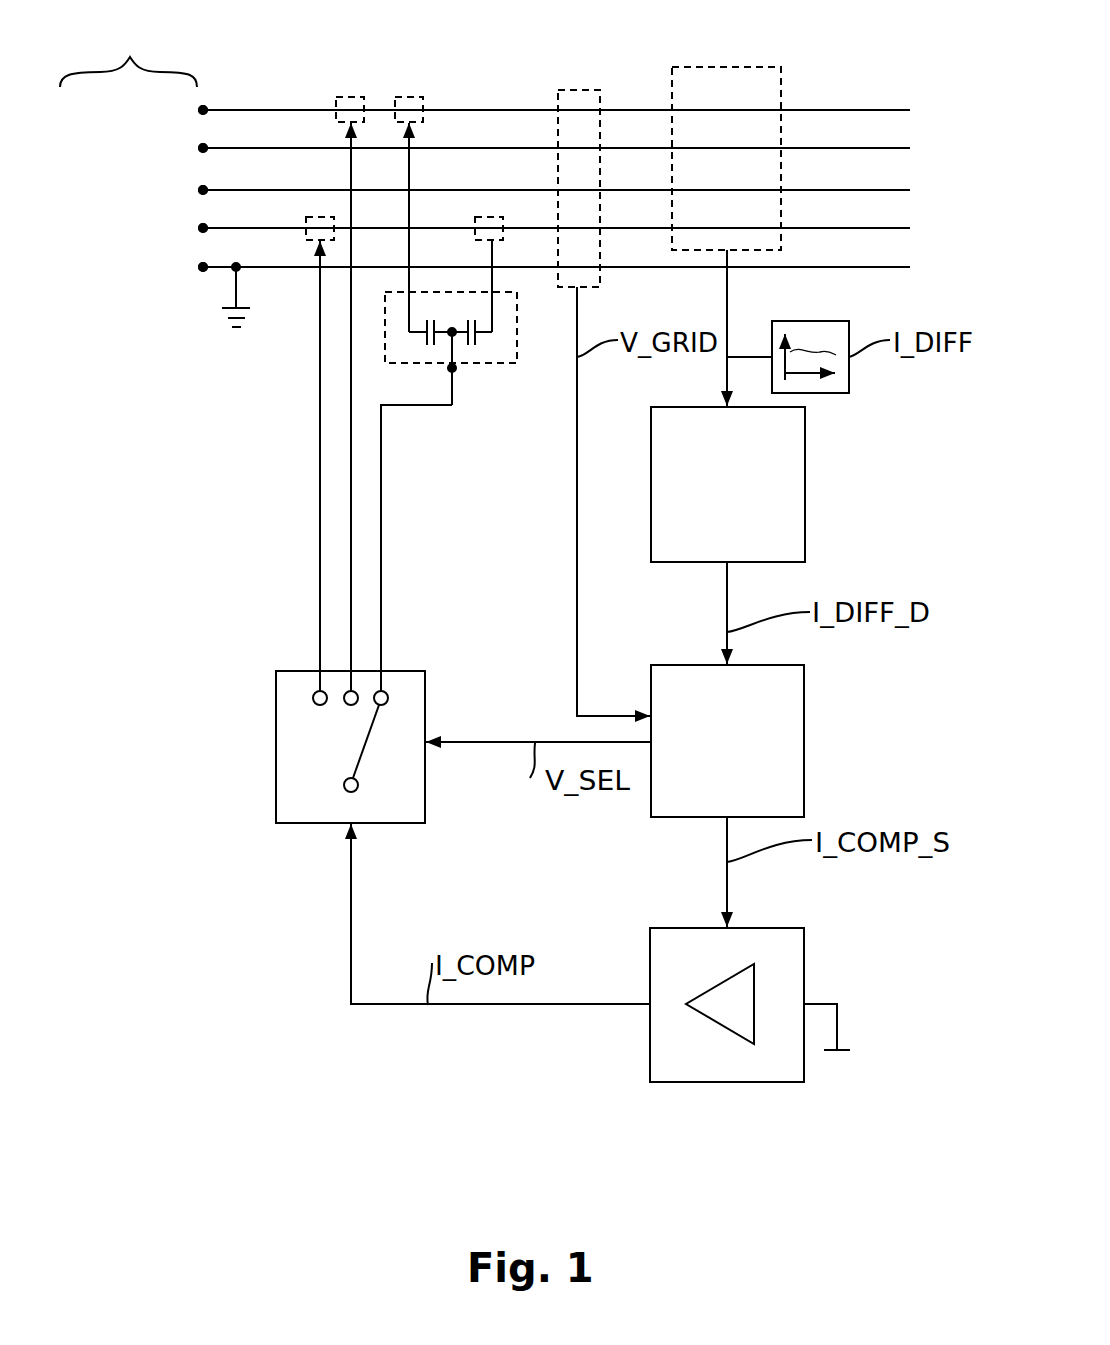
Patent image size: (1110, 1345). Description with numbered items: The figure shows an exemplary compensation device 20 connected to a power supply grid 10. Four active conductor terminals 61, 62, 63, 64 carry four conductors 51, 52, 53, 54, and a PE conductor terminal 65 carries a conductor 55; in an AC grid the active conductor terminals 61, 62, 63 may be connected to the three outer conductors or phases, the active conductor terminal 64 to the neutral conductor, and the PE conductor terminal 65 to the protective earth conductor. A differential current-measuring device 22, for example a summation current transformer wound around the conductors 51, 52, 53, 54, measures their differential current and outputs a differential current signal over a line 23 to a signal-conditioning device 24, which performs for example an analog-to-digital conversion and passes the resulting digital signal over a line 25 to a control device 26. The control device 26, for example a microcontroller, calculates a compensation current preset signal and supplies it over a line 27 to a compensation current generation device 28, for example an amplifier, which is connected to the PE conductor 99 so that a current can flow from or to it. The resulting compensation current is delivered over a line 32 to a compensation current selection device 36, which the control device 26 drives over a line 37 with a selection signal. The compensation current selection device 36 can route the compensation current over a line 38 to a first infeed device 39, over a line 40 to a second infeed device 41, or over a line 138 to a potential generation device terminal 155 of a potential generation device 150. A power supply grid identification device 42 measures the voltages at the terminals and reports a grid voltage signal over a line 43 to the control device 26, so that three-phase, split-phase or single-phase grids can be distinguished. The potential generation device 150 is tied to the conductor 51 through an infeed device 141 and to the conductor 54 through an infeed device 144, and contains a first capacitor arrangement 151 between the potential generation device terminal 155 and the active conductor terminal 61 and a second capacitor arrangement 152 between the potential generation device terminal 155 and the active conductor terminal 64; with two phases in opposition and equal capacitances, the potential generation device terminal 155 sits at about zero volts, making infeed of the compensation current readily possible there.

The power supply grid 10 is at (128, 57).
The compensation device 20 is at (278, 948).
The differential current-measuring device 22 is at (733, 66).
The line 23 is at (727, 310).
The signal-conditioning device 24 is at (805, 472).
The line 25 is at (727, 602).
The control device 26 is at (804, 742).
The line 27 is at (727, 897).
The compensation current generation device 28 is at (790, 927).
The line 32 is at (515, 1008).
The compensation current selection device 36 is at (425, 685).
The line 37 is at (485, 743).
The line 38 is at (318, 553).
The first infeed device 39 is at (317, 215).
The line 40 is at (350, 603).
The second infeed device 41 is at (353, 95).
The power supply grid identification device 42 is at (577, 88).
The line 43 is at (575, 553).
The conductor 51 is at (910, 110).
The conductor 52 is at (910, 148).
The conductor 53 is at (910, 190).
The conductor 54 is at (910, 228).
The conductor 55 is at (910, 267).
The active conductor terminal 61 is at (205, 106).
The active conductor terminal 62 is at (202, 150).
The active conductor terminal 63 is at (202, 192).
The active conductor terminal 64 is at (202, 231).
The PE conductor terminal 65 is at (203, 270).
The PE conductor 99 is at (228, 320).
The line 138 is at (383, 553).
The infeed device 141 is at (411, 95).
The infeed device 144 is at (491, 215).
The potential generation device 150 is at (466, 373).
The first capacitor arrangement 151 is at (420, 343).
The second capacitor arrangement 152 is at (478, 342).
The potential generation device terminal 155 is at (454, 370).